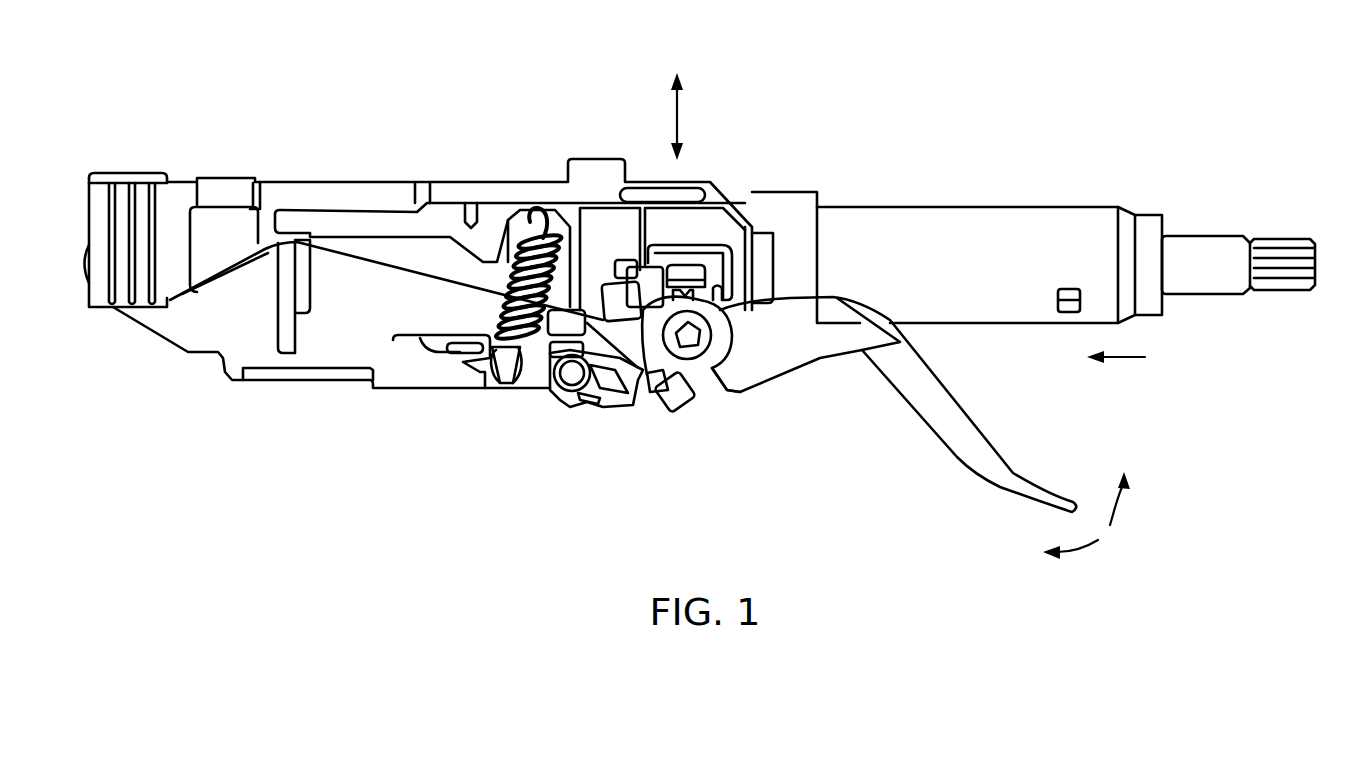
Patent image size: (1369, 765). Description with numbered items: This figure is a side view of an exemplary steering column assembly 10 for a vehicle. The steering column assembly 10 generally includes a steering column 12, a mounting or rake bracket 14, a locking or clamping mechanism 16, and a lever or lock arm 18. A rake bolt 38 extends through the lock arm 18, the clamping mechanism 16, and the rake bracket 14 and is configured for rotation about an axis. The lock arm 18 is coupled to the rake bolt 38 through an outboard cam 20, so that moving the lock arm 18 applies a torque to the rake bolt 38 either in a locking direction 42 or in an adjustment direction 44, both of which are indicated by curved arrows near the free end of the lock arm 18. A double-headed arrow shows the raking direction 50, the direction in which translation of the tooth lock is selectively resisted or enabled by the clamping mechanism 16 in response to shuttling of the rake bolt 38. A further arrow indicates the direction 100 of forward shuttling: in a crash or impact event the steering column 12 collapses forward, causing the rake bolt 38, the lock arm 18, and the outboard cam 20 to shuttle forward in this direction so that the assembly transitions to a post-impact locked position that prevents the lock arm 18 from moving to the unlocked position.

The steering column assembly 10 is at (1083, 118).
The steering column 12 is at (1168, 229).
The rake bracket 14 is at (494, 191).
The clamping mechanism 16 is at (716, 276).
The lock arm 18 is at (910, 408).
The outboard cam 20 is at (693, 352).
The rake bolt 38 is at (684, 342).
The locking direction 42 is at (1124, 503).
The adjustment direction 44 is at (1080, 546).
The raking direction 50 is at (677, 115).
The forward shuttling direction 100 is at (1118, 357).